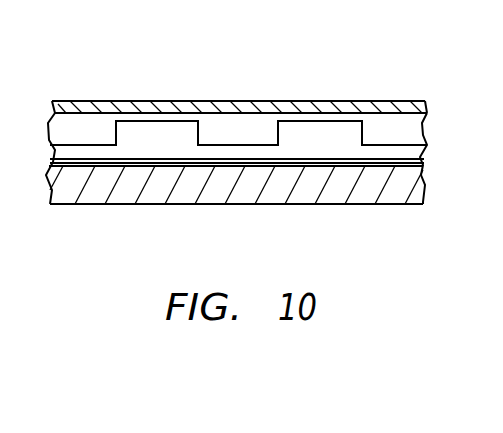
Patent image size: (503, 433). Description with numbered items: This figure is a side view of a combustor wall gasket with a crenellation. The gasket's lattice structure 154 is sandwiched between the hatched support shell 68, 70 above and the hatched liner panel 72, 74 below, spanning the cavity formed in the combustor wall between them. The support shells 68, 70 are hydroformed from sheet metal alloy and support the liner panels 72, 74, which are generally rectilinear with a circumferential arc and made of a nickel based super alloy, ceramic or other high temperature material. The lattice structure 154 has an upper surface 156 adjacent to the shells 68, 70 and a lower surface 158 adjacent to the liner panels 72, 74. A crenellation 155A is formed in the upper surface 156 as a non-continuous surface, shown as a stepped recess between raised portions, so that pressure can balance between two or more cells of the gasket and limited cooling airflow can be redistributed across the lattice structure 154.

The outer support shell 68 is at (239, 65).
The inner support shell 70 is at (118, 101).
The crenellation 155A is at (237, 132).
The upper surface 156 is at (321, 121).
The lattice structure 154 is at (417, 156).
The lower surface 158 is at (333, 157).
The liner panel 72 is at (236, 206).
The liner panel 74 is at (312, 190).